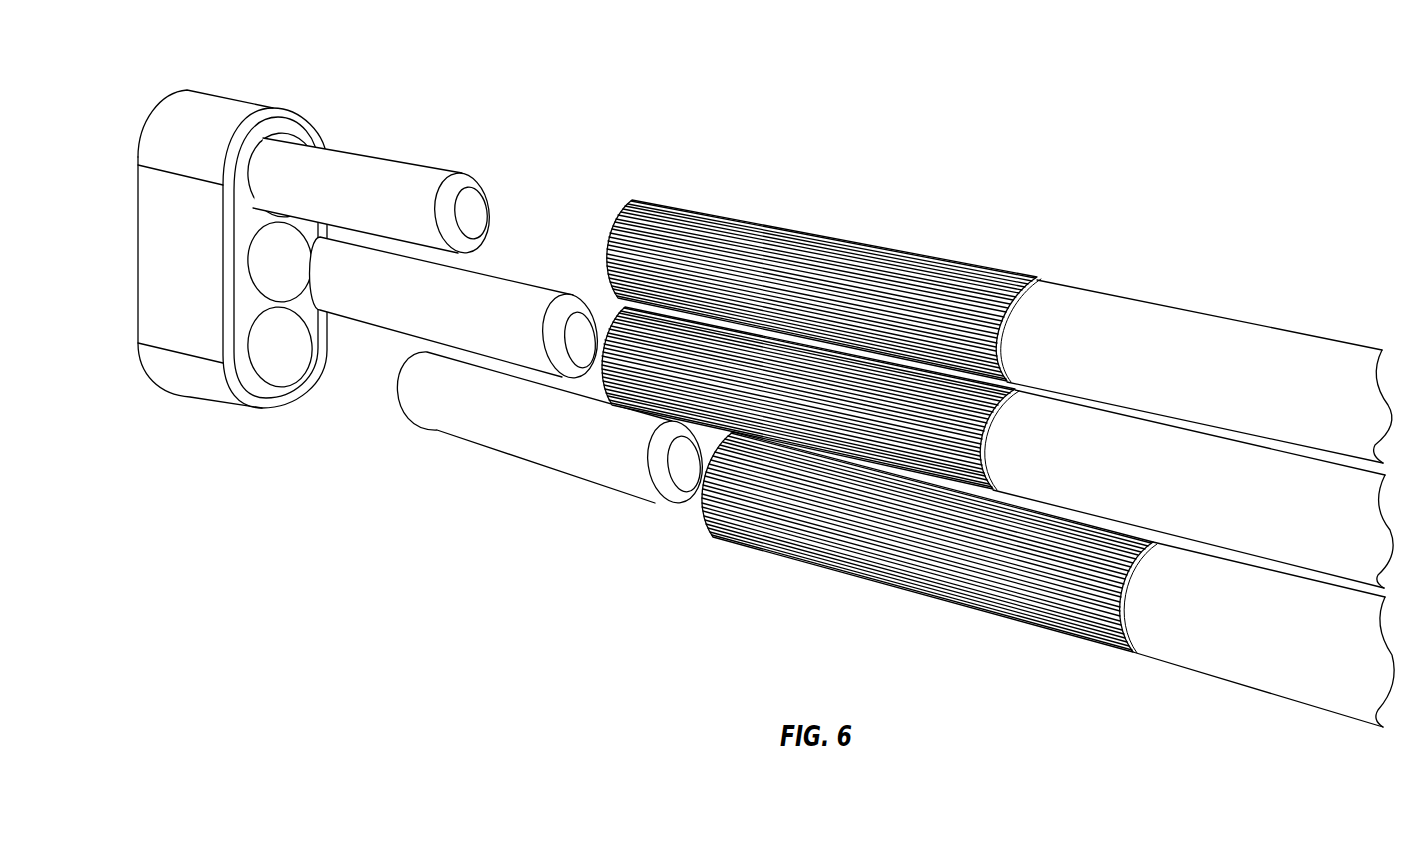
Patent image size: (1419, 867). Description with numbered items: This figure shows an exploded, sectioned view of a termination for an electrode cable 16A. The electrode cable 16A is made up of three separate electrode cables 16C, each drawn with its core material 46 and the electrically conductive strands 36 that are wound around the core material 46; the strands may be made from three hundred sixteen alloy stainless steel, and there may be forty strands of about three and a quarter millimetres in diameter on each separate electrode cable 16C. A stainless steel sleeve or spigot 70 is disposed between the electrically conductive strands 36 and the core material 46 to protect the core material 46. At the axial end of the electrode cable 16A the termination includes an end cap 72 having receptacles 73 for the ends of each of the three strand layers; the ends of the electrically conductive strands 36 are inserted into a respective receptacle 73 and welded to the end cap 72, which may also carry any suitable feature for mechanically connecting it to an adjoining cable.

The electrode cable 16A is at (576, 62).
The separate electrode cable 16C is at (849, 421).
The electrically conductive strands 36 is at (863, 243).
The core material 46 is at (1195, 312).
The sleeve or spigot 70 is at (412, 160).
The end cap 72 is at (283, 392).
The receptacles 73 is at (291, 360).